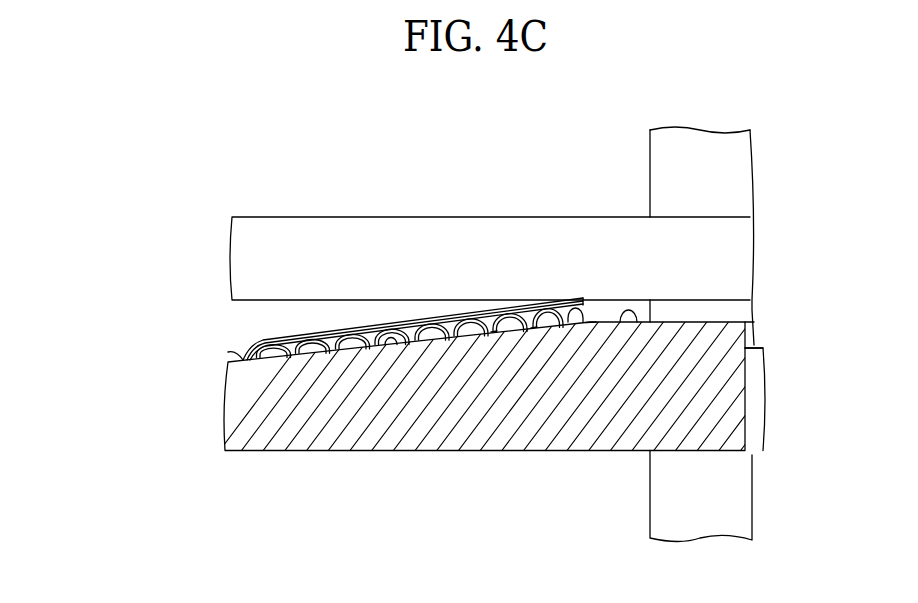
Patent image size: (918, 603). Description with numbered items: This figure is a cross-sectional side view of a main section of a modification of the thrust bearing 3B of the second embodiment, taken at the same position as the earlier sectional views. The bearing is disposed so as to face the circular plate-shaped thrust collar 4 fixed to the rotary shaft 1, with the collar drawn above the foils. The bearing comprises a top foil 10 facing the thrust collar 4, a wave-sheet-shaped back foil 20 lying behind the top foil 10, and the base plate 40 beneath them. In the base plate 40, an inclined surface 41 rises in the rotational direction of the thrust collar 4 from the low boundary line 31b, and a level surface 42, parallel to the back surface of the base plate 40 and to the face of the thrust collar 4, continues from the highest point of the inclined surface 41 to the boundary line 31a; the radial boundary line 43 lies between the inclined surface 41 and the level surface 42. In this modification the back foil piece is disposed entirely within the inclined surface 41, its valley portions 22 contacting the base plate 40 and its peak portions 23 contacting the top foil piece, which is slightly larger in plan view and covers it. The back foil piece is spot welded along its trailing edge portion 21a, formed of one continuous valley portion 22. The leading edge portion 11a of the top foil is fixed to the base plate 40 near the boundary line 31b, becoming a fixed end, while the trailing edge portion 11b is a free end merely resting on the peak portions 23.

The rotary shaft 1 is at (672, 146).
The thrust collar 4 is at (615, 226).
The base plate 40 is at (313, 425).
The inclined surface 41 is at (396, 350).
The level surface 42 is at (621, 322).
The boundary line 43 is at (590, 321).
The thrust bearing 3B is at (321, 306).
The top foil 10 is at (287, 333).
The edge portion 11a is at (232, 352).
The edge portion 11b is at (582, 300).
The back foil 20 is at (440, 323).
The edge portion 21a is at (585, 322).
The valley portions 22 is at (535, 327).
The peak portions 23 is at (428, 325).
The boundary line 31a is at (752, 312).
The boundary line 31b is at (757, 334).